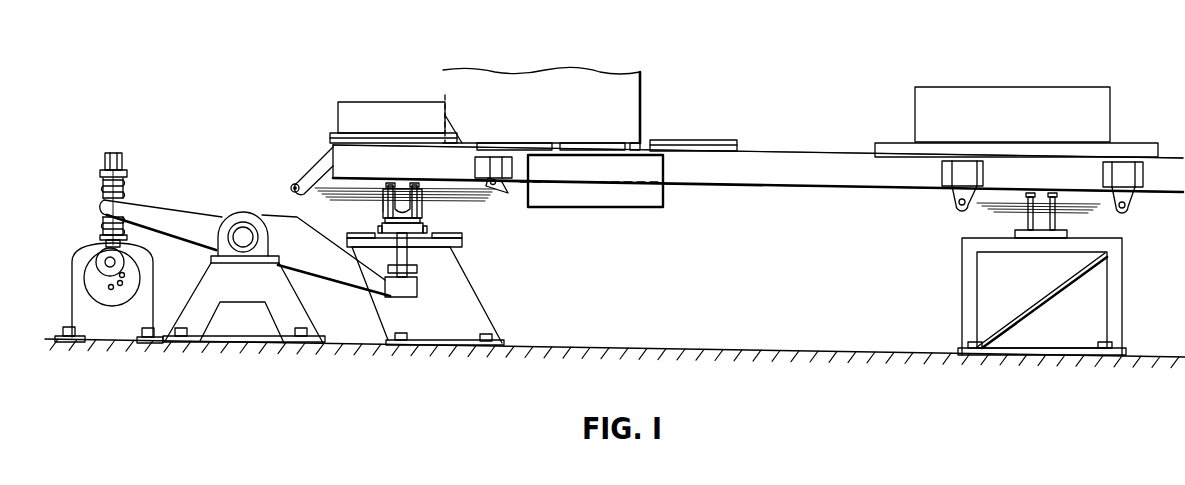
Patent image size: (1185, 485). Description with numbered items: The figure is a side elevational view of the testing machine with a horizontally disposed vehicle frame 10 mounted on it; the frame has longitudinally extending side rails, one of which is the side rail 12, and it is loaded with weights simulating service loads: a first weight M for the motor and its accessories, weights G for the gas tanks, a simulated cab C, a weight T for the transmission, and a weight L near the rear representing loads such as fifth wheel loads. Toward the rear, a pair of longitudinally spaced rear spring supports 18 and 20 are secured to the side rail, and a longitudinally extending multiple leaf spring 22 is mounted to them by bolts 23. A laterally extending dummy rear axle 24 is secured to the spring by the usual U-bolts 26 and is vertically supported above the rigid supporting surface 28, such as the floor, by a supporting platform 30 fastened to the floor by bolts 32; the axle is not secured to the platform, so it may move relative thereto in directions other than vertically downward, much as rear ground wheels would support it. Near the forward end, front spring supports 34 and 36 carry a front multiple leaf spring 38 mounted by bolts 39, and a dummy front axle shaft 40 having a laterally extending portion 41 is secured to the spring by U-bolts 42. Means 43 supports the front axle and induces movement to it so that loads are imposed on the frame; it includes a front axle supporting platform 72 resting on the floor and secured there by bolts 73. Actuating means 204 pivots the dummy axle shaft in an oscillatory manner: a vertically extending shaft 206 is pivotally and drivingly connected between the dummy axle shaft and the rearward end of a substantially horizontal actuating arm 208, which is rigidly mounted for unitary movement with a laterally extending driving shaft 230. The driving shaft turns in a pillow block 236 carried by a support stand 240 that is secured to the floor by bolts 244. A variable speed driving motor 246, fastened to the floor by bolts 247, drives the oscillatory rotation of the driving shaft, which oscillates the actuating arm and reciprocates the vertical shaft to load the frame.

The vehicle frame 10 is at (772, 136).
The side rail 12 is at (808, 158).
The rear spring support 18 is at (960, 185).
The rear spring support 20 is at (1128, 190).
The multiple leaf spring 22 is at (1000, 209).
The bolts 23 is at (959, 206).
The dummy rear axle 24 is at (1043, 222).
The U-bolts 26 is at (1019, 203).
The rigid supporting surface 28 is at (742, 350).
The supporting platform 30 is at (1115, 285).
The bolts 32 is at (1113, 347).
The front spring support 34 is at (316, 167).
The front spring support 36 is at (475, 165).
The multiple leaf spring 38 is at (466, 198).
The bolts 39 is at (292, 183).
The dummy front axle shaft 40 is at (379, 212).
The laterally extending portion 41 is at (406, 208).
The U-bolts 42 is at (390, 189).
The supporting and moving means 43 is at (455, 231).
The front axle supporting platform 72 is at (465, 286).
The bolts 73 is at (487, 336).
The actuating means 204 is at (234, 206).
The shaft 206 is at (405, 250).
The actuating arm 208 is at (410, 292).
The driving shaft 230 is at (241, 228).
The pillow block 236 is at (267, 248).
The support stand 240 is at (288, 308).
The bolts 244 is at (312, 323).
The variable speed driving motor 246 is at (143, 292).
The bolts 247 is at (109, 325).
The simulated cab C is at (553, 83).
The first weight M is at (387, 110).
The weight T is at (693, 140).
The weight L is at (991, 100).
The weights G is at (601, 197).